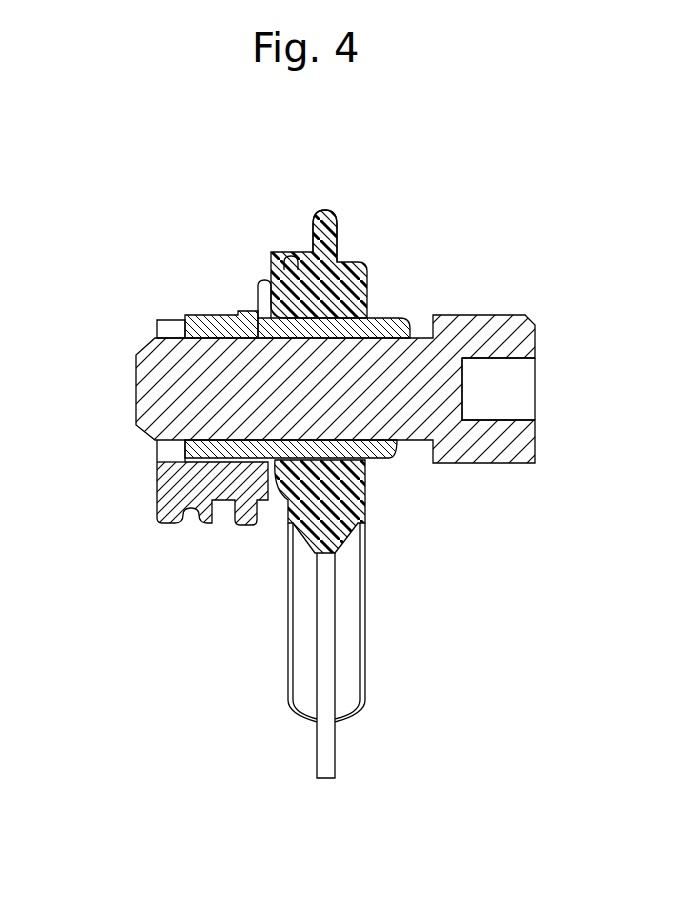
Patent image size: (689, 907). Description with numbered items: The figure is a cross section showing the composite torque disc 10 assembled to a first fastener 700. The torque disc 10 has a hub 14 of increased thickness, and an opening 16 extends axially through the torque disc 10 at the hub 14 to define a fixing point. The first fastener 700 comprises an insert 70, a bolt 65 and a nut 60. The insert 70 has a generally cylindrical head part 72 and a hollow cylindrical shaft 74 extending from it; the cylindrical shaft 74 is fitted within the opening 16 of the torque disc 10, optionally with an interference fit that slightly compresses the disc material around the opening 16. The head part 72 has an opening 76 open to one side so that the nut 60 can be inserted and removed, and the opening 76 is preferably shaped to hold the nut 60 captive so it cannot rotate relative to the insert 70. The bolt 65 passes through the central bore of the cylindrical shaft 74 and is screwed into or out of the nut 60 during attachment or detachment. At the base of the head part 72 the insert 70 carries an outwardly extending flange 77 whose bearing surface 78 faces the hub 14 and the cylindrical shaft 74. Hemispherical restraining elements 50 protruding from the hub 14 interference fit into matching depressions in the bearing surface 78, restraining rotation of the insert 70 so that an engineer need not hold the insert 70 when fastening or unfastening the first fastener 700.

The first fastener 700 is at (123, 403).
The bolt 65 is at (508, 339).
The cylindrical shaft 74 is at (378, 328).
The opening 76 is at (258, 309).
The cylindrical head part 72 is at (158, 322).
The flange 77 is at (267, 280).
The restraining elements 50 is at (338, 262).
The hub 14 is at (300, 257).
The bearing surface 78 is at (279, 260).
The torque disc 10 is at (372, 258).
The nut 60 is at (233, 462).
The insert 70 is at (153, 495).
The opening 16 is at (372, 462).